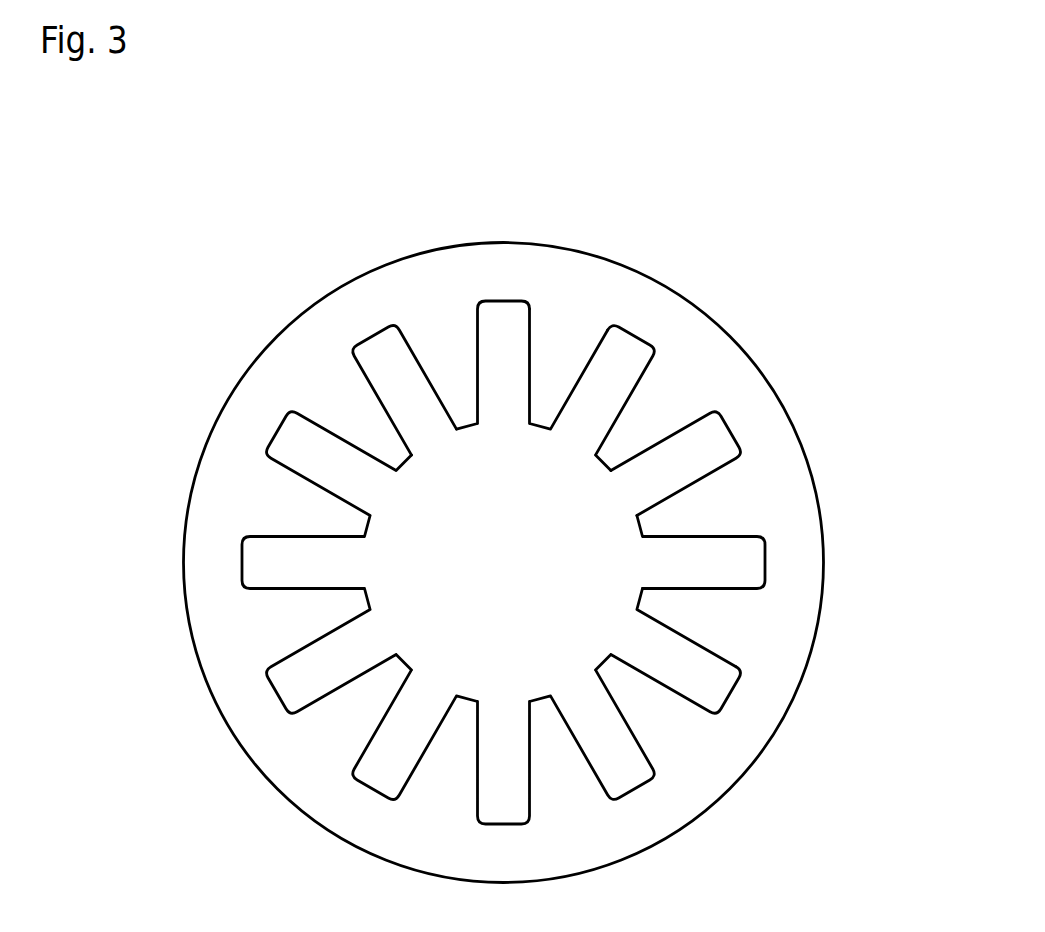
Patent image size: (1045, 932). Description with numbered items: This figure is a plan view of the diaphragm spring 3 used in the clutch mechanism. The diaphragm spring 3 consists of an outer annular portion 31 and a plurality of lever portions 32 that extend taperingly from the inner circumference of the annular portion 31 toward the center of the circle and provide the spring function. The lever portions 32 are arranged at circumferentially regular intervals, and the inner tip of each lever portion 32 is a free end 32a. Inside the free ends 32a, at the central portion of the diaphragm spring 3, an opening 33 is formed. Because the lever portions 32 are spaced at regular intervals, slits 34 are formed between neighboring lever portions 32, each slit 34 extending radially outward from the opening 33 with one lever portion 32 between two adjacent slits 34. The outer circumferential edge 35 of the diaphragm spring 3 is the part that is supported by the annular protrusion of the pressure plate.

The diaphragm spring 3 is at (747, 225).
The annular portion 31 is at (712, 377).
The lever portion 32 is at (700, 510).
The free end 32a is at (687, 622).
The opening 33 is at (542, 468).
The slit 34 is at (383, 365).
The circumferential edge 35 is at (826, 530).